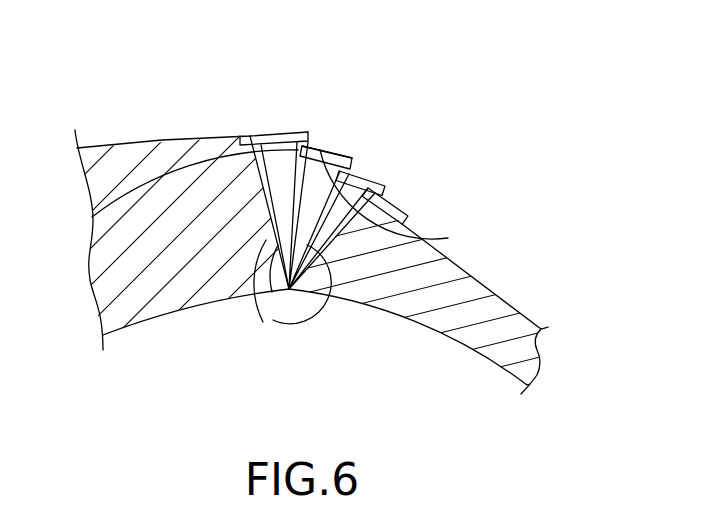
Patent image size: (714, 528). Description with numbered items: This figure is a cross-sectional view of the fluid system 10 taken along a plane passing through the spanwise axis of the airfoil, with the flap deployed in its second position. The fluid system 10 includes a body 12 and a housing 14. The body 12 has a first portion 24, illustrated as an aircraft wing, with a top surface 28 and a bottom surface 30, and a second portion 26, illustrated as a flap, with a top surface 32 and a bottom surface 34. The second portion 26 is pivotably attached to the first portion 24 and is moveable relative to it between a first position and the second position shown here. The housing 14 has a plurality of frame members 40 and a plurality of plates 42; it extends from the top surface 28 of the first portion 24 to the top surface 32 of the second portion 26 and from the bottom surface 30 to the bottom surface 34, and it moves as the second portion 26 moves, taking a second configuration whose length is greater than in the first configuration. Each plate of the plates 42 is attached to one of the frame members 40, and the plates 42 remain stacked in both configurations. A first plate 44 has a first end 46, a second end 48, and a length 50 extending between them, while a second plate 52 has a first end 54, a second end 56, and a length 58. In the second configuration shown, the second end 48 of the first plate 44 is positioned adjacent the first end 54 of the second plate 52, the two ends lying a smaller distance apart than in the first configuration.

The fluid system 10 is at (437, 53).
The body 12 is at (590, 175).
The housing 14 is at (326, 80).
The first portion 24 is at (147, 134).
The second portion 26 is at (493, 273).
The top surface 28 is at (96, 146).
The bottom surface 30 is at (153, 323).
The top surface 32 is at (520, 312).
The bottom surface 34 is at (428, 326).
The frame members 40 is at (282, 320).
The plates 42 is at (296, 136).
The first plate 44 is at (249, 138).
The first end 46 is at (245, 136).
The second end 48 is at (310, 136).
The length 50 is at (308, 129).
The second plate 52 is at (428, 241).
The first end 54 is at (93, 216).
The second end 56 is at (374, 177).
The length 58 is at (352, 162).